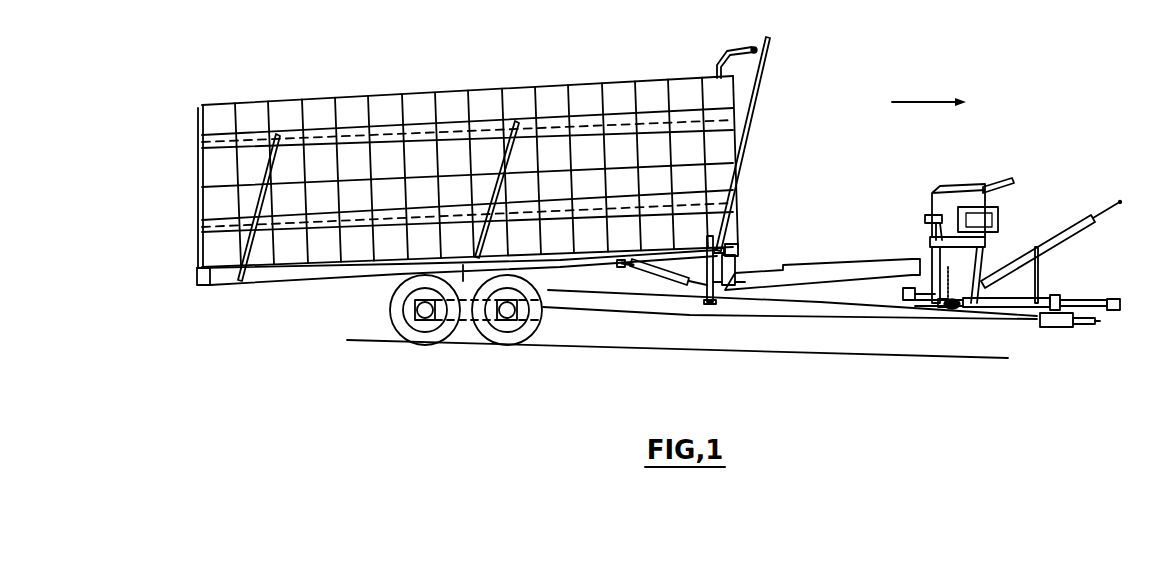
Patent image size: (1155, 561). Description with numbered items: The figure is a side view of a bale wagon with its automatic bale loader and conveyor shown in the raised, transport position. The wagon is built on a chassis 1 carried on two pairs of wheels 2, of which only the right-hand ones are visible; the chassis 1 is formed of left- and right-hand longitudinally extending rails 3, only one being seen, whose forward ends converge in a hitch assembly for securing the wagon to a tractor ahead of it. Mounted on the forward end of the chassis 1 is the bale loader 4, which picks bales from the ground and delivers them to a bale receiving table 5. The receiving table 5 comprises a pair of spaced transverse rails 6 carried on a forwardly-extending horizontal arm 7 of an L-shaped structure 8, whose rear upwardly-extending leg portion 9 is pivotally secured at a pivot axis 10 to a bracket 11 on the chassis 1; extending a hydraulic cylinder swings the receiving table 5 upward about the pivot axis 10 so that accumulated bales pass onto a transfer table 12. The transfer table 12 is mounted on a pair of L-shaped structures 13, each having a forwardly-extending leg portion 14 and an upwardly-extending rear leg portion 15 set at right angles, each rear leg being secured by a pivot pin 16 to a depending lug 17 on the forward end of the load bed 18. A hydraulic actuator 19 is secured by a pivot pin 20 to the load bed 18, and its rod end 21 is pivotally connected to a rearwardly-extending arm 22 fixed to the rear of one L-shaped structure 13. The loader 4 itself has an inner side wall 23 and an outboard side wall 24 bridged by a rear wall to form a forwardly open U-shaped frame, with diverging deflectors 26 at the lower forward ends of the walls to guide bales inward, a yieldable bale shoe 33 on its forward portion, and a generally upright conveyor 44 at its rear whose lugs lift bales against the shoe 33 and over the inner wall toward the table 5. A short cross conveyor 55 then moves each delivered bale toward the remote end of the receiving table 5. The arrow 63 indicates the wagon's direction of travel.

The chassis 1 is at (645, 313).
The wheels 2 is at (391, 310).
The longitudinally extending rails 3 is at (712, 298).
The bale loader 4 is at (999, 267).
The bale receiving table 5 is at (965, 306).
The transverse rails 6 is at (957, 310).
The horizontal arm 7 is at (947, 308).
The L-shaped structure 8 is at (940, 308).
The leg portion 9 is at (915, 300).
The pivot axis 10 is at (908, 298).
The bracket 11 is at (884, 272).
The transfer table 12 is at (822, 323).
The L-shaped structures 13 is at (825, 290).
The forwardly-extending leg portion 14 is at (855, 284).
The upwardly-extending rear leg portion 15 is at (737, 263).
The pivot pin 16 is at (740, 248).
The depending lug 17 is at (724, 302).
The load bed 18 is at (690, 242).
The hydraulic actuator 19 is at (657, 278).
The pivot pin 20 is at (632, 338).
The rod end 21 is at (692, 288).
The rearwardly-extending arm 22 is at (707, 290).
The inner side wall 23 is at (934, 233).
The outboard side wall 24 is at (960, 183).
The deflectors 26 is at (1003, 179).
The bale shoe 33 is at (1000, 214).
The upright conveyor 44 is at (924, 218).
The cross conveyor 55 is at (1010, 326).
The arrow 63 is at (928, 102).